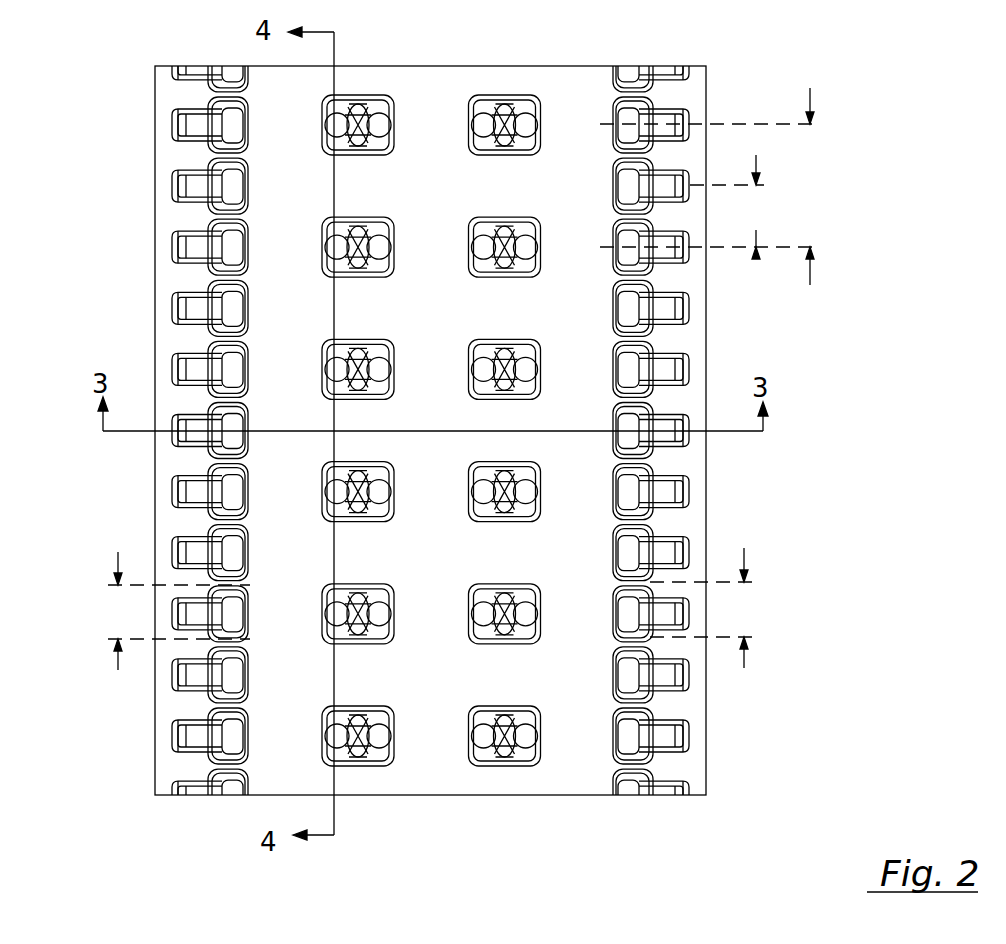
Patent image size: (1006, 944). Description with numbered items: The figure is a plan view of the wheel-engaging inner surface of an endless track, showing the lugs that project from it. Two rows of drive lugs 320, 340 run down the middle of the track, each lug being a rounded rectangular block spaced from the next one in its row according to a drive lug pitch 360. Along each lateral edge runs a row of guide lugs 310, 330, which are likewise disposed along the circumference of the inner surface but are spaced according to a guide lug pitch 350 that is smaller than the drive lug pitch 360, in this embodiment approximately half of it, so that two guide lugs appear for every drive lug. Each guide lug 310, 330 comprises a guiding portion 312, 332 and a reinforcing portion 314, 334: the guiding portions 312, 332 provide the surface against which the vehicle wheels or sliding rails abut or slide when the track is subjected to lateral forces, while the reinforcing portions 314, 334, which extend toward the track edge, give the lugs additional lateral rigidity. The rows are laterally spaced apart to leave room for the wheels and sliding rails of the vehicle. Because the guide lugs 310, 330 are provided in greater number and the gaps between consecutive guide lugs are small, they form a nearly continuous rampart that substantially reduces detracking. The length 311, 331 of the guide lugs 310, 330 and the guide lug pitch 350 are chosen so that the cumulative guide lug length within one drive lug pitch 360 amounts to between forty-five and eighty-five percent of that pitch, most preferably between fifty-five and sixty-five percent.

The guide lug 310 is at (148, 446).
The length of the guide lug 311 is at (172, 597).
The guiding portion 312 is at (228, 722).
The reinforcing portion 314 is at (190, 736).
The drive lug 320 is at (378, 756).
The guide lug 330 is at (702, 444).
The length of the guide lug 331 is at (714, 595).
The guiding portion 332 is at (632, 718).
The reinforcing portion 334 is at (688, 731).
The drive lug 340 is at (520, 756).
The guide lug pitch 350 is at (708, 237).
The drive lug pitch 360 is at (718, 171).